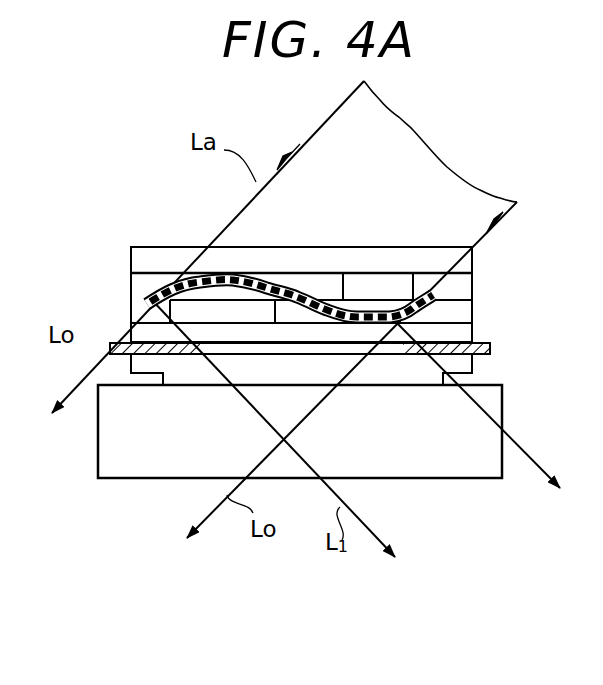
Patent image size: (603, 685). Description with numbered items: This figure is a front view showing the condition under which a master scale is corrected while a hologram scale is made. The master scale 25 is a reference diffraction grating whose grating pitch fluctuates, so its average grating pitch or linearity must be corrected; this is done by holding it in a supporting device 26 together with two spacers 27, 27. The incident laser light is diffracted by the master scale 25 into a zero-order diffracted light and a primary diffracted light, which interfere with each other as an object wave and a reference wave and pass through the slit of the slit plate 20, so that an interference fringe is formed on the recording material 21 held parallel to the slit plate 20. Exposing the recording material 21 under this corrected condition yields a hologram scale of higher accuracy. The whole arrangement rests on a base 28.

The slit plate 20 is at (490, 349).
The recording material 21 is at (182, 378).
The master scale 25 is at (437, 300).
The supporting device 26 is at (148, 255).
The spacers 27 is at (187, 313).
The base 28 is at (482, 467).